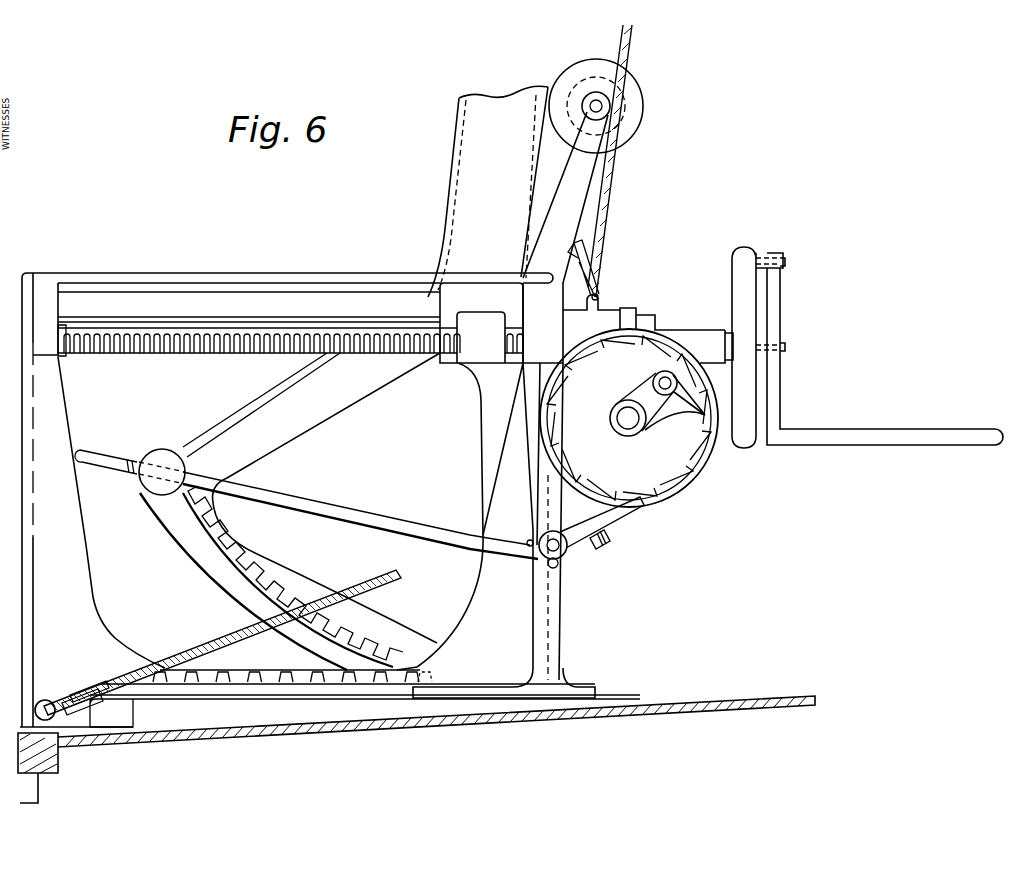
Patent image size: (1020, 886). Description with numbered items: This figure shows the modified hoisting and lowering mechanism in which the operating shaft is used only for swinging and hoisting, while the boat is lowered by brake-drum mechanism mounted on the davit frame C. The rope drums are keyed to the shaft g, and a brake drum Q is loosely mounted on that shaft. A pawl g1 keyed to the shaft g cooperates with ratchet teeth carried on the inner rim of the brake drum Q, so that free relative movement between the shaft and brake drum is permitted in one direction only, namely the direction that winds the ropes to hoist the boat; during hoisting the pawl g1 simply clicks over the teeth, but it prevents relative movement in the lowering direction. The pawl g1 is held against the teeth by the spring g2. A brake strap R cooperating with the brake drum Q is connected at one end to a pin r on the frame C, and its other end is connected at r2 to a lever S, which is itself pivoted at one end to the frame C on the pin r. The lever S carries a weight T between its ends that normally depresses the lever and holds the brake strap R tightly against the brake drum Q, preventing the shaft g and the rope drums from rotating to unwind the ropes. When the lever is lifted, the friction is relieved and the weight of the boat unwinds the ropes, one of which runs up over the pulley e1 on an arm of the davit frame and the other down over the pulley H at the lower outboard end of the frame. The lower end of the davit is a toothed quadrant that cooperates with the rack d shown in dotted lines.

The pulley e1 is at (640, 116).
The supporting frame C is at (550, 670).
The weight T is at (168, 452).
The lever S is at (352, 515).
The rack d is at (413, 690).
The pulley H is at (55, 716).
The brake drum Q is at (680, 490).
The shaft g is at (630, 436).
The pawl g1 is at (653, 383).
The spring g2 is at (685, 420).
The pin r is at (557, 568).
The connection of brake strap to lever r2 is at (528, 541).
The brake strap R is at (608, 522).